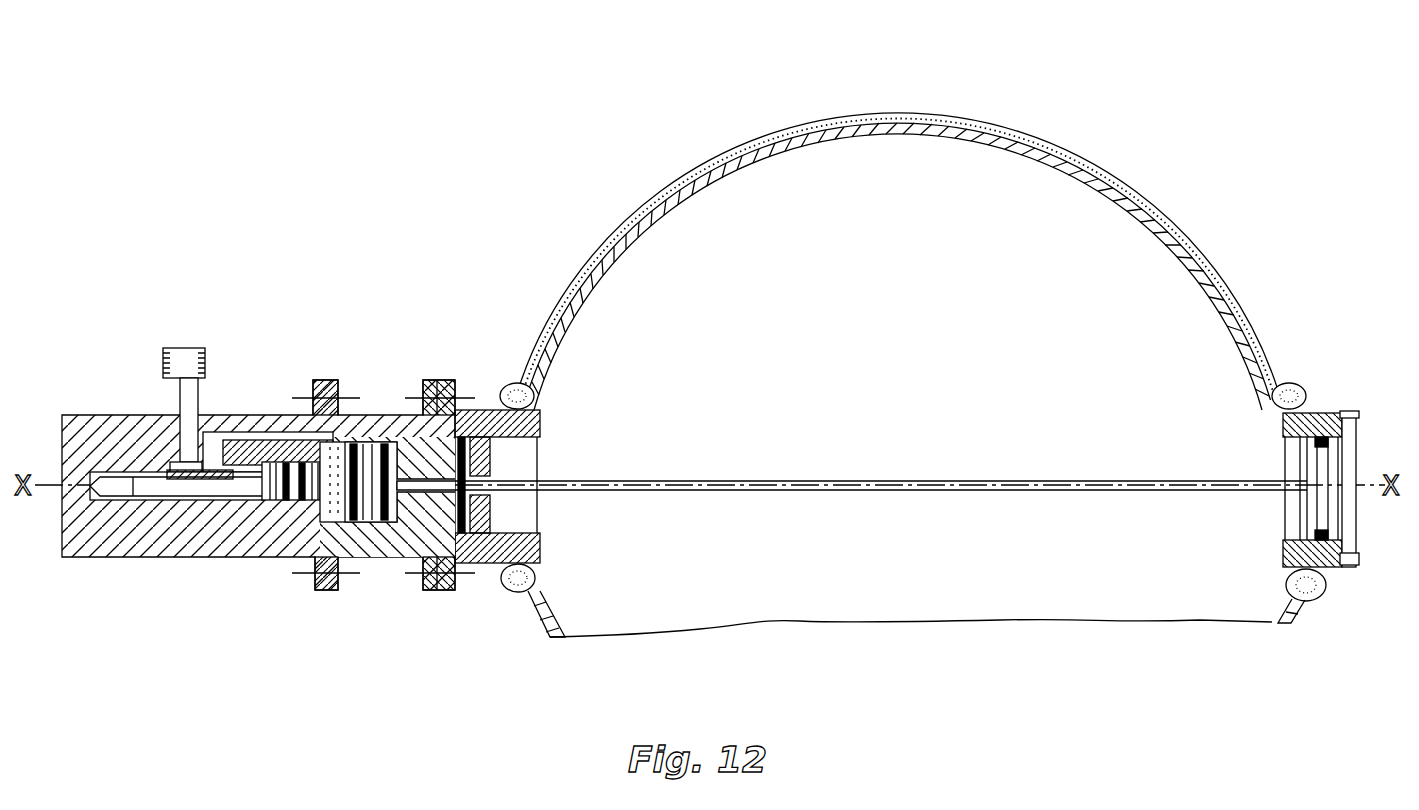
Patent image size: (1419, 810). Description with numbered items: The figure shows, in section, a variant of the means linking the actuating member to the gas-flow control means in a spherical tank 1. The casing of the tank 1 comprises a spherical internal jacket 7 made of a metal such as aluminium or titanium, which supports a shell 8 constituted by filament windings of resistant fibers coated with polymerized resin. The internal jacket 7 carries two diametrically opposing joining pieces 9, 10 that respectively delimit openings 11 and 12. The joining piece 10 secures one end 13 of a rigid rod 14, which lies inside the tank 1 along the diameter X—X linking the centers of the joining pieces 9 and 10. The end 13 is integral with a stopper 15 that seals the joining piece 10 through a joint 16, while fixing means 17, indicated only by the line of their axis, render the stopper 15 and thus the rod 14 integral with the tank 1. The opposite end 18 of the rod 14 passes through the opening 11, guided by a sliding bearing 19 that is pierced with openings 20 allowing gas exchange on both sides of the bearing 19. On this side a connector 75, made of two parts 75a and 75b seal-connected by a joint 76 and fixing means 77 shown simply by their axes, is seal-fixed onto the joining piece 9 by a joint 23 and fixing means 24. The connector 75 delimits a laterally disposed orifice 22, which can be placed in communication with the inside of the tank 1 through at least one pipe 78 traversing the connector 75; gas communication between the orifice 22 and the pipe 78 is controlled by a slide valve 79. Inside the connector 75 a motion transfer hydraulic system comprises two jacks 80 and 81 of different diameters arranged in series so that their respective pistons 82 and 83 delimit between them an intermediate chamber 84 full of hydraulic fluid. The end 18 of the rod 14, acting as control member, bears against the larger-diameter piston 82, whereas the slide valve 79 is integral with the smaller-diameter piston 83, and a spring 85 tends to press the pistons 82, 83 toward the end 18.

The tank 1 is at (901, 97).
The spherical internal jacket 7 is at (1050, 168).
The shell 8 is at (1085, 153).
The joining piece 9 is at (490, 423).
The joining piece 10 is at (1316, 392).
The opening 11 is at (540, 470).
The opening 12 is at (1290, 525).
The end of rod 13 is at (1297, 480).
The rigid rod 14 is at (940, 480).
The stopper 15 is at (1352, 520).
The joint 16 is at (1322, 568).
The fixing means 17 is at (1360, 415).
The end of rod 18 is at (510, 500).
The sliding bearing 19 is at (485, 540).
The openings 20 is at (498, 556).
The orifice 22 is at (190, 348).
The joint 23 is at (466, 412).
The fixing means 24 is at (443, 378).
The connector 75 is at (278, 592).
The connector part 75a is at (395, 428).
The connector part 75b is at (278, 430).
The joint 76 is at (338, 450).
The fixing means 77 is at (350, 592).
The pipe 78 is at (240, 440).
The slide valve 79 is at (165, 505).
The jack 80 is at (392, 530).
The jack 81 is at (273, 519).
The piston 82 is at (370, 515).
The piston 83 is at (300, 520).
The intermediate chamber 84 is at (355, 465).
The spring 85 is at (222, 512).